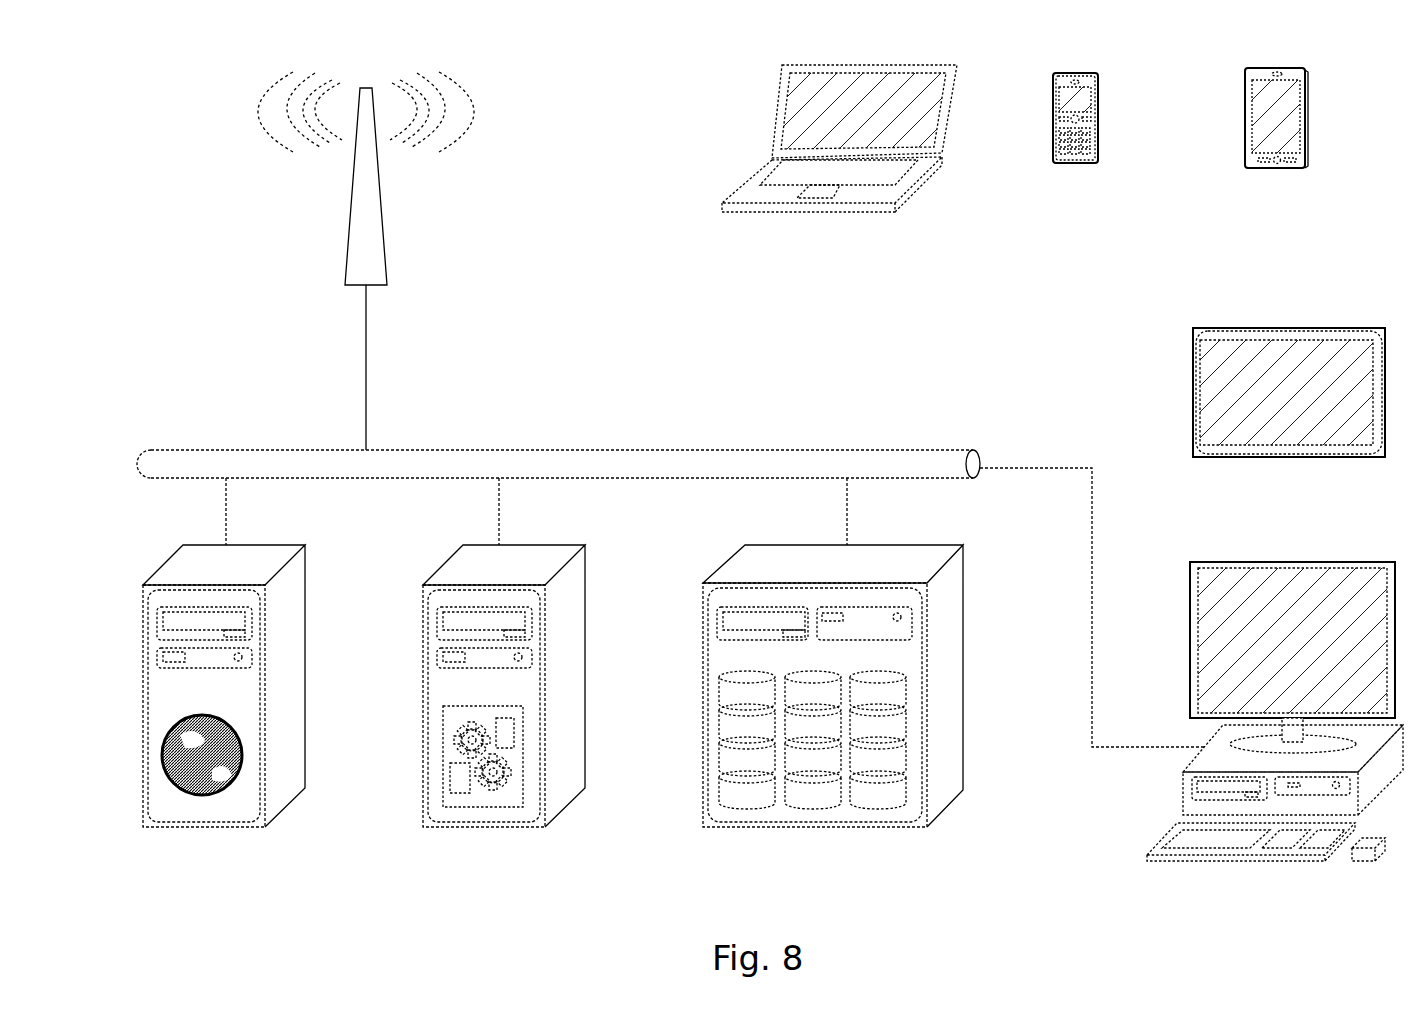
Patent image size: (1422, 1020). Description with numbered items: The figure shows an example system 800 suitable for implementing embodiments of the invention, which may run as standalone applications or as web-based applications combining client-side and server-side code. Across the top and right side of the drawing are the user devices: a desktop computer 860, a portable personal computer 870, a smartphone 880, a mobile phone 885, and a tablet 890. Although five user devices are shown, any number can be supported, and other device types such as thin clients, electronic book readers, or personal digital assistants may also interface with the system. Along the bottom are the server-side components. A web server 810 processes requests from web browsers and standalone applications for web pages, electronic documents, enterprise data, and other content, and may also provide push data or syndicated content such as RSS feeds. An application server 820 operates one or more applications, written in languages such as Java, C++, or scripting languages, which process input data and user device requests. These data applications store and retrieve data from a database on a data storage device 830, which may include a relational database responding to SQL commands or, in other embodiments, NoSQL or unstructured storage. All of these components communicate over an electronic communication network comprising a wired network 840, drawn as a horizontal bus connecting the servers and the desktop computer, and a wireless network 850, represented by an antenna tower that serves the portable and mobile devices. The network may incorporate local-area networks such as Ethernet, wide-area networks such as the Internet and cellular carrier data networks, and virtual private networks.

The system 800 is at (163, 103).
The web server 810 is at (212, 816).
The application server 820 is at (505, 858).
The data storage device 830 is at (802, 808).
The wired network 840 is at (670, 580).
The wireless network 850 is at (392, 185).
The desktop computer 860 is at (1273, 870).
The portable personal computer 870 is at (828, 222).
The smartphone 880 is at (1283, 183).
The mobile phone 885 is at (1080, 183).
The tablet 890 is at (1283, 463).